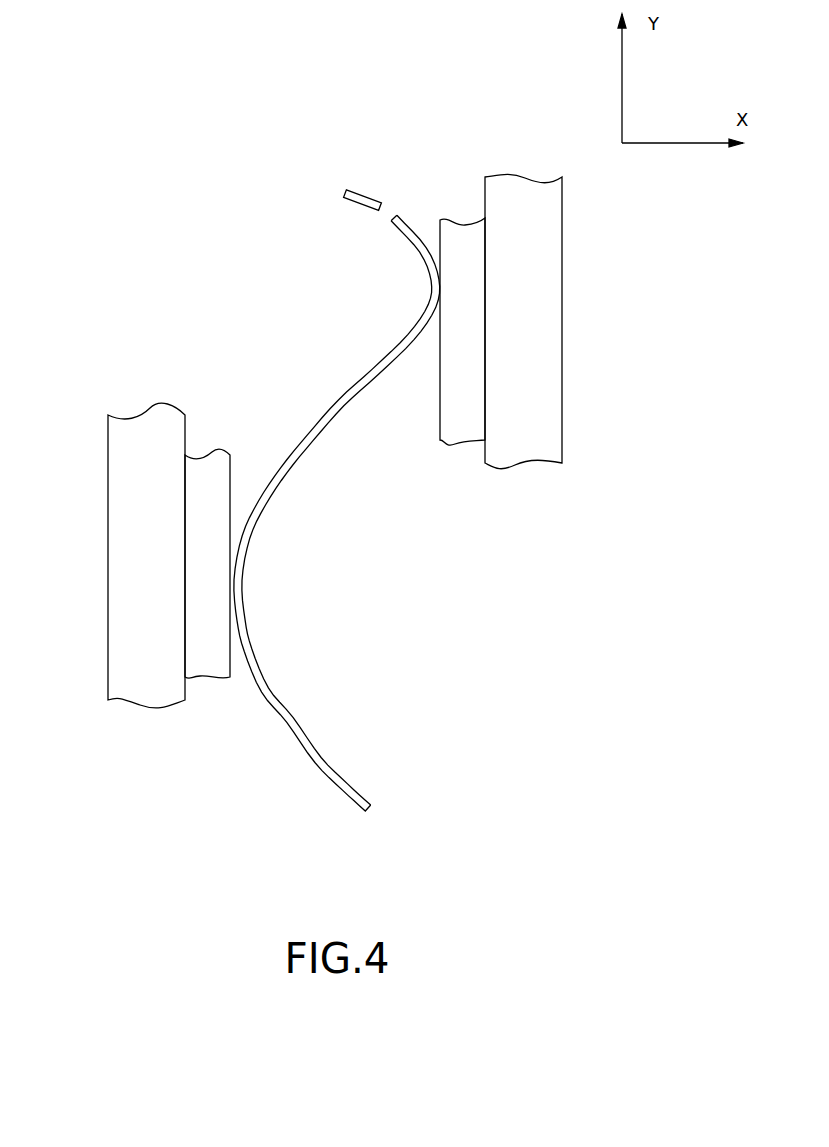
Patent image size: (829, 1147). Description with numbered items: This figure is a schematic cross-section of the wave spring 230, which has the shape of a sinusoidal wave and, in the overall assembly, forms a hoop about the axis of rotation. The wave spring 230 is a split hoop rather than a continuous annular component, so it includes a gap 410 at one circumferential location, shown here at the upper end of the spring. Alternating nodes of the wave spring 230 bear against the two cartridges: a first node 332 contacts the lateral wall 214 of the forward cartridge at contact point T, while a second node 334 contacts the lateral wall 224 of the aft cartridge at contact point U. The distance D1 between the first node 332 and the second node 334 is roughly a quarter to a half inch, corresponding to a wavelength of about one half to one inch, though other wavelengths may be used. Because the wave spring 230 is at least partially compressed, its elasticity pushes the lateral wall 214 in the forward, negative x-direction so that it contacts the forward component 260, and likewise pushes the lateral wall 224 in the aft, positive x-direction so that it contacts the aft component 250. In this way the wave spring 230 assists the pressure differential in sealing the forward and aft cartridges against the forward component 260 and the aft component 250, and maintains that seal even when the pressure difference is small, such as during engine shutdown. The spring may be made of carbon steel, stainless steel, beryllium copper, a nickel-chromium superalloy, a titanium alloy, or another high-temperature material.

The wave spring 230 is at (340, 772).
The forward component 260 is at (146, 413).
The lateral wall 214 is at (216, 453).
The lateral wall 224 is at (462, 442).
The aft component 250 is at (527, 178).
The gap 410 is at (403, 184).
The second node 334 is at (432, 285).
The first node 332 is at (243, 592).
The contact point U is at (458, 281).
The contact point T is at (216, 582).
The distance D1 is at (330, 278).